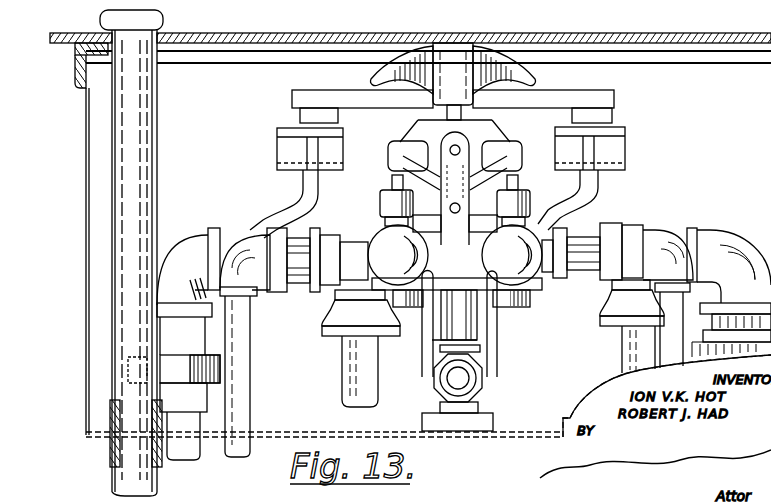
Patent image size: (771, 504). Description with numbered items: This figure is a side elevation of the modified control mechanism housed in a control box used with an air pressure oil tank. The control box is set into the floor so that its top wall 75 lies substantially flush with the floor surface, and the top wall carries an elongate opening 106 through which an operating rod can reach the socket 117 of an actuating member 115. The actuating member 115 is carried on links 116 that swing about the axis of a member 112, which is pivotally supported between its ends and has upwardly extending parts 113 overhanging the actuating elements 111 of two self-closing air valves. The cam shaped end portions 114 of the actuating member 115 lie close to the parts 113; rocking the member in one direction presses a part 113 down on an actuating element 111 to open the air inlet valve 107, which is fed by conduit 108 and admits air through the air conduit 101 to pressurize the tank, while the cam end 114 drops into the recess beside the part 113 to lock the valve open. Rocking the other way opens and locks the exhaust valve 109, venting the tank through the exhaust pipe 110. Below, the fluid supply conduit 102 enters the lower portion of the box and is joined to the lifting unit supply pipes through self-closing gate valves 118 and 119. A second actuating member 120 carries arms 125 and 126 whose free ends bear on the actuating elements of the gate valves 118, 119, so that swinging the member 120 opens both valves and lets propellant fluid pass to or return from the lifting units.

The top wall 75 is at (651, 32).
The second opening 106 is at (532, 33).
The socket 117 is at (456, 48).
The actuating member 120 is at (573, 96).
The arm 125 is at (300, 115).
The arm 126 is at (612, 113).
The member 112 is at (452, 142).
The actuating member 115 is at (498, 134).
The parts 113 is at (395, 155).
The cam shaped end portions 114 is at (410, 134).
The links 116 is at (466, 201).
The actuating element 111 is at (393, 183).
The valve 107 is at (533, 286).
The valve 109 is at (405, 262).
The conduit 102 is at (428, 366).
The air conduit 101 is at (481, 376).
The exhaust pipe 110 is at (250, 357).
The gate valve 118 is at (332, 303).
The gate valve 119 is at (614, 231).
The conduit 108 is at (667, 347).